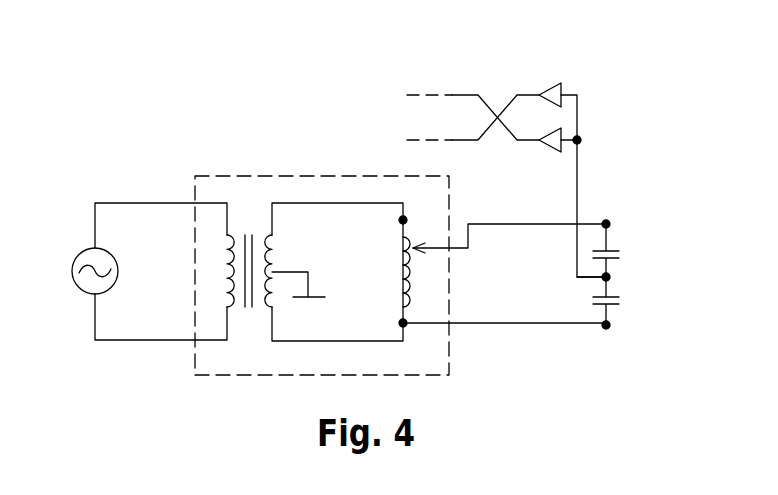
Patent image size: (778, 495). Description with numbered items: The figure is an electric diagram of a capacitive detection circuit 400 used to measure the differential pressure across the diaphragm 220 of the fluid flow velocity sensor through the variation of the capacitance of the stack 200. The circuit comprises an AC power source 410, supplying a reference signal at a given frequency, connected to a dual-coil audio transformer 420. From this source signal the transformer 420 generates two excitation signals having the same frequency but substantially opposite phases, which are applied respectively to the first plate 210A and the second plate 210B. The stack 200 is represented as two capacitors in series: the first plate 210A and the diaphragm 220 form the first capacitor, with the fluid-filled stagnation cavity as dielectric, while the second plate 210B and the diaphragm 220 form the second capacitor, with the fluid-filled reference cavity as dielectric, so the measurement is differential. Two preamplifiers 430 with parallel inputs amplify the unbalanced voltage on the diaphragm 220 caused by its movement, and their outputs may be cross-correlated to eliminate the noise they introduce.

The capacitive detection circuit 400 is at (242, 83).
The AC power source 410 is at (81, 250).
The dual-coil audio transformer 420 is at (259, 175).
The preamplifiers 430 is at (549, 86).
The stack 200 is at (645, 336).
The first plate 210A is at (612, 249).
The second plate 210B is at (612, 306).
The diaphragm 220 is at (620, 274).